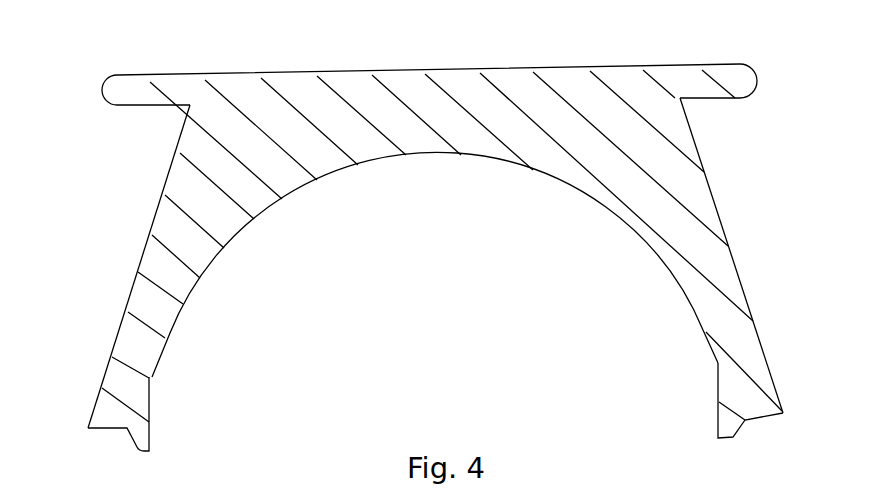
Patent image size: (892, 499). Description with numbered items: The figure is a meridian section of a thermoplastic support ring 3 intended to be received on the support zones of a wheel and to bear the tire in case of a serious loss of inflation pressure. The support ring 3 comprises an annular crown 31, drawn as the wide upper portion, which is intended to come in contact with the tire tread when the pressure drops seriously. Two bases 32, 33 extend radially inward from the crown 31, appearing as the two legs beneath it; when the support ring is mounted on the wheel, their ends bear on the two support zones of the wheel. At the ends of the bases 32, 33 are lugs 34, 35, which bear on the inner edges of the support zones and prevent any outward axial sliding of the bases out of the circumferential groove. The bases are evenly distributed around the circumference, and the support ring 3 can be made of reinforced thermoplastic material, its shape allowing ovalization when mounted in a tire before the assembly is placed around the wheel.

The support ring 3 is at (409, 226).
The annular crown 31 is at (467, 90).
The base 32 is at (702, 280).
The base 33 is at (160, 295).
The lug 34 is at (144, 440).
The lug 35 is at (725, 427).